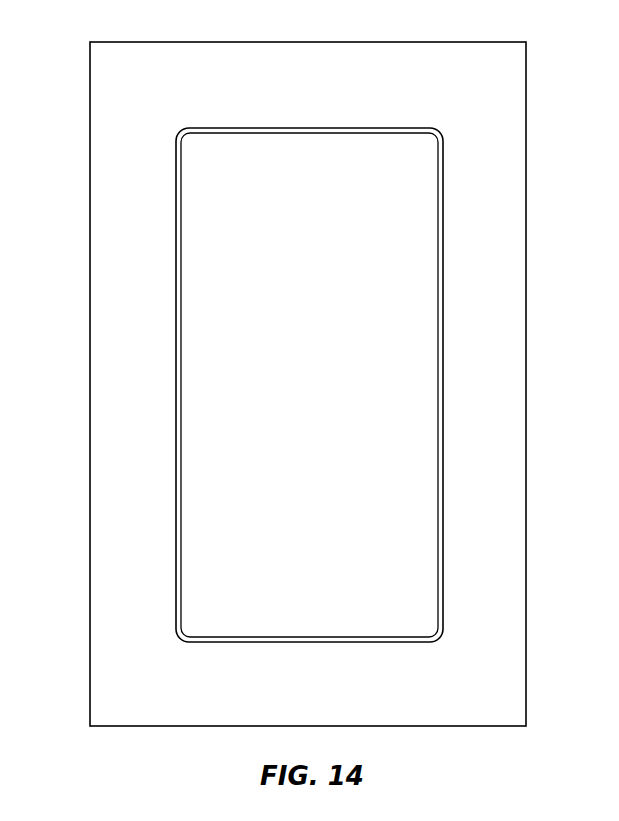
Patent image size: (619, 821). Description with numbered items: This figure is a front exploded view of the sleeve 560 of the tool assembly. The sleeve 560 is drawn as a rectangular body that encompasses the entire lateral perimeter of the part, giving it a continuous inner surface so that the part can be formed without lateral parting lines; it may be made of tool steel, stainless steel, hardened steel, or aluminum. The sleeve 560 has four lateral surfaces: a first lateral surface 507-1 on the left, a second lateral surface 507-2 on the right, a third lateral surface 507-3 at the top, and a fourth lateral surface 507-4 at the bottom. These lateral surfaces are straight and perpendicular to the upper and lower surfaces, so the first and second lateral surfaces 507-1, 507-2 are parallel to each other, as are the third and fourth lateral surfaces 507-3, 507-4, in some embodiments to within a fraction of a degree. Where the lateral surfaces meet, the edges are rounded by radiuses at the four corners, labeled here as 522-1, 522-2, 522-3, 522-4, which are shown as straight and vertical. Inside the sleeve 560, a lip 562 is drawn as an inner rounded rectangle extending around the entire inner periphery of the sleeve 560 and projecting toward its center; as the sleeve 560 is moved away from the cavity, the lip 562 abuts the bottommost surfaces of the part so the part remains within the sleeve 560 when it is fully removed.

The sleeve 560 is at (322, 95).
The lip 562 is at (181, 342).
The first lateral surface 507-1 is at (176, 385).
The second lateral surface 507-2 is at (443, 385).
The third lateral surface 507-3 is at (354, 128).
The fourth lateral surface 507-4 is at (355, 642).
The first corner 522-1 is at (180, 135).
The second corner 522-2 is at (439, 135).
The third corner 522-3 is at (439, 634).
The fourth corner 522-4 is at (180, 634).